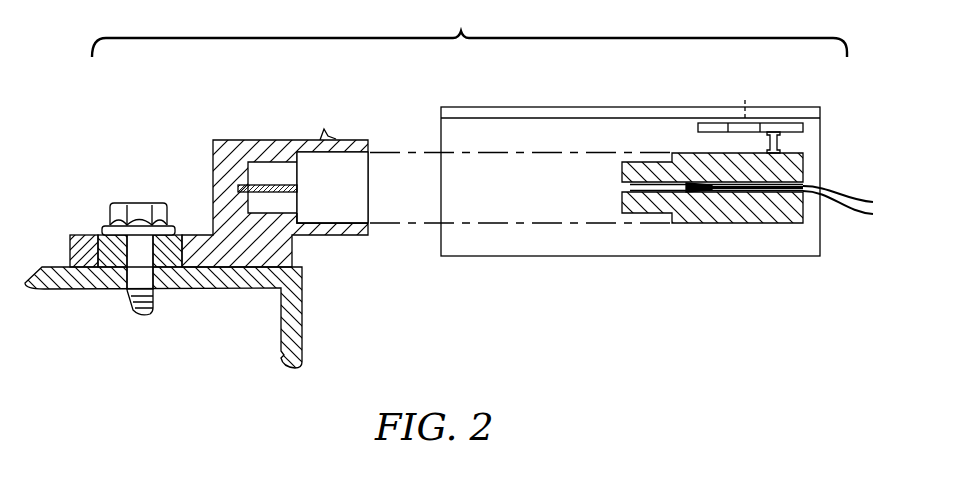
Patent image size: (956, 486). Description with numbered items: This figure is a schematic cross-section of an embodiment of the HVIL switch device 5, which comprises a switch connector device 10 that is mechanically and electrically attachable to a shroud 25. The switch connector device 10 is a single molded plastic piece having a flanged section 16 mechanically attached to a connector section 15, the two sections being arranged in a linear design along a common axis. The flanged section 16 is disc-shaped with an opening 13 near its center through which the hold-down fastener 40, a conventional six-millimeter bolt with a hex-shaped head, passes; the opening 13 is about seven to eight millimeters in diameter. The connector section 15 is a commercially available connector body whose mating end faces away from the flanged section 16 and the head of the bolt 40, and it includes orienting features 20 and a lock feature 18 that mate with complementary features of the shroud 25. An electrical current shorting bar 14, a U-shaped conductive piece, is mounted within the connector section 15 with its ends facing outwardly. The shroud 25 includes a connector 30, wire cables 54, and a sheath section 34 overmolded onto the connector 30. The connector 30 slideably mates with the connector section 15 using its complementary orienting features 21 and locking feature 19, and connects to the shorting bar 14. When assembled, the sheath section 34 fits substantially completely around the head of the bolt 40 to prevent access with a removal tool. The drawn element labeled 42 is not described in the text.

The HVIL switch device 5 is at (461, 31).
The switch connector device 10 is at (243, 140).
The opening 13 is at (127, 252).
The electrical current shorting bar 14 is at (265, 182).
The connector section 15 is at (358, 227).
The flanged section 16 is at (73, 252).
The lock feature 18 is at (325, 137).
The locking feature 19 is at (738, 128).
The orienting features 20 is at (298, 218).
The orienting features 21 is at (670, 220).
The shroud 25 is at (777, 107).
The connector 30 is at (665, 147).
The sheath section 34 is at (548, 112).
The hold-down fastener 40 is at (117, 213).
The ground plate 42 is at (53, 287).
The wire cables 54 is at (853, 194).